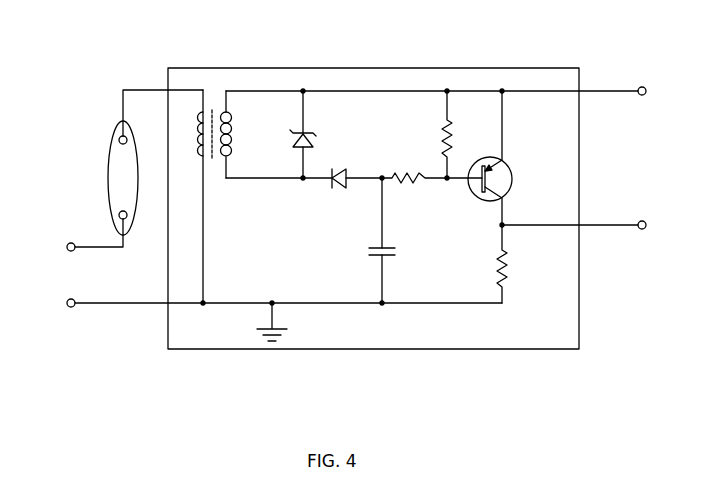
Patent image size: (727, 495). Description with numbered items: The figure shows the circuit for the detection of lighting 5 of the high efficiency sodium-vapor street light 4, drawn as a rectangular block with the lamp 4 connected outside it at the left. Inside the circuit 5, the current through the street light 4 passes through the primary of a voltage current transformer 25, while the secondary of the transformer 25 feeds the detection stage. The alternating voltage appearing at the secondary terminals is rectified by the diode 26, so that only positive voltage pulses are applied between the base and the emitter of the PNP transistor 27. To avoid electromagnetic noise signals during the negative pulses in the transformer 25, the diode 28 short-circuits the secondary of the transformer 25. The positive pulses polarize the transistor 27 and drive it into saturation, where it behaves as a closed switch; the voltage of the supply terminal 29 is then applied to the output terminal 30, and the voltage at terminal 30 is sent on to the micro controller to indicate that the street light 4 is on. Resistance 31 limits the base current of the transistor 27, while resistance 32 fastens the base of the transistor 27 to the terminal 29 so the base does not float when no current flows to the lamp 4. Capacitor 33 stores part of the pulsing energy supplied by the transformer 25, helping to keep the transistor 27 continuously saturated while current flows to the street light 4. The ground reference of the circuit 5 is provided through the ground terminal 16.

The high efficiency sodium-vapor street light 4 is at (135, 170).
The circuit for the detection of lighting 5 is at (472, 68).
The ground connection terminal 16 is at (268, 303).
The voltage current transformer 25 is at (251, 196).
The diode 26 is at (342, 195).
The PNP transistor 27 is at (494, 196).
The diode 28 is at (396, 134).
The supply terminal 29 is at (589, 91).
The output terminal 30 is at (589, 225).
The resistance 31 is at (415, 166).
The resistance 32 is at (459, 133).
The capacitor 33 is at (396, 240).